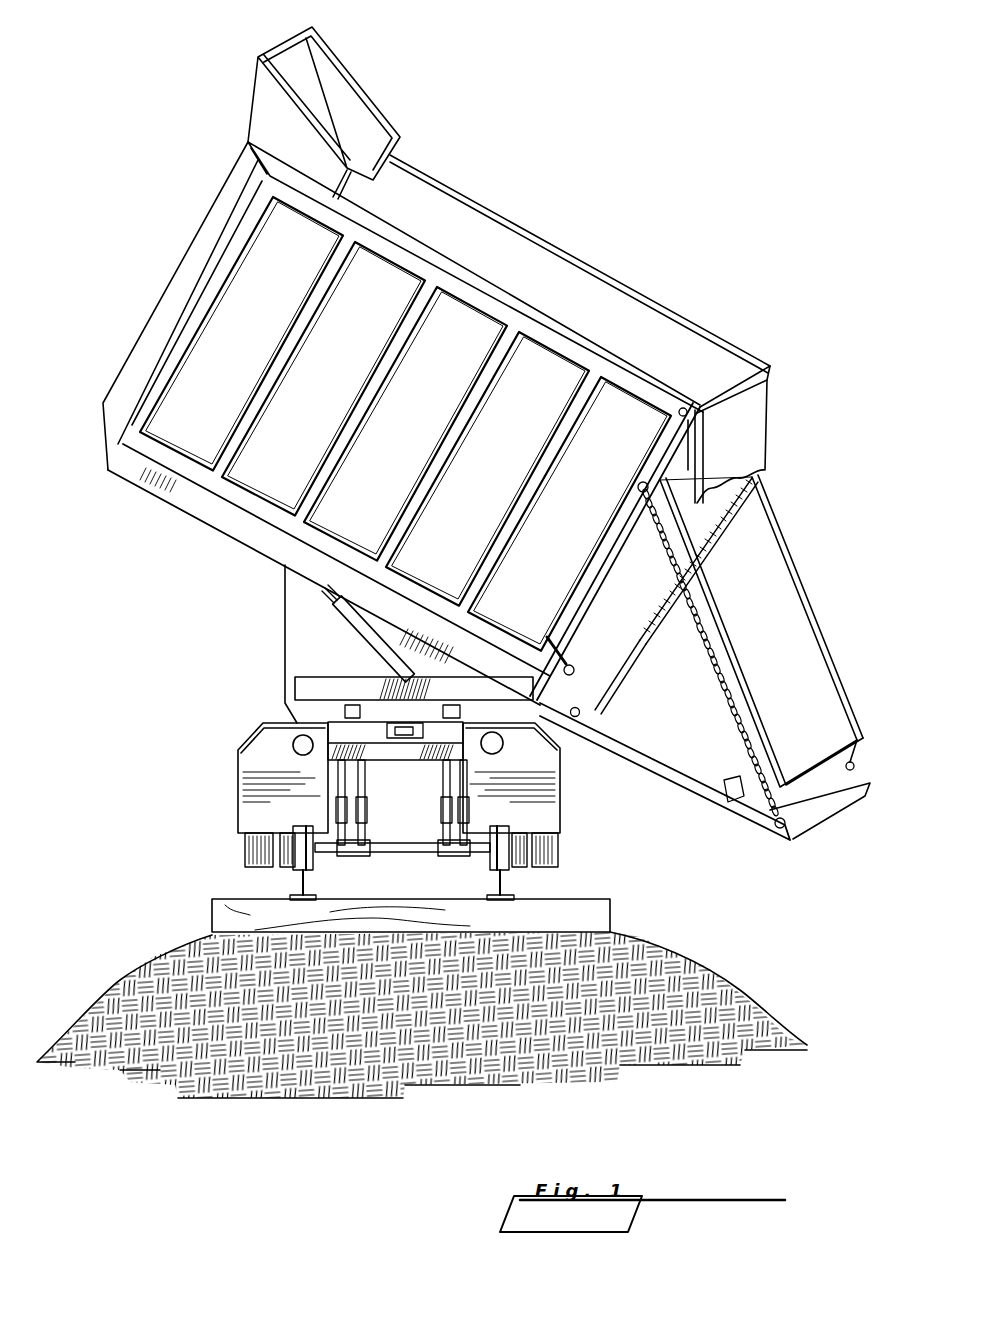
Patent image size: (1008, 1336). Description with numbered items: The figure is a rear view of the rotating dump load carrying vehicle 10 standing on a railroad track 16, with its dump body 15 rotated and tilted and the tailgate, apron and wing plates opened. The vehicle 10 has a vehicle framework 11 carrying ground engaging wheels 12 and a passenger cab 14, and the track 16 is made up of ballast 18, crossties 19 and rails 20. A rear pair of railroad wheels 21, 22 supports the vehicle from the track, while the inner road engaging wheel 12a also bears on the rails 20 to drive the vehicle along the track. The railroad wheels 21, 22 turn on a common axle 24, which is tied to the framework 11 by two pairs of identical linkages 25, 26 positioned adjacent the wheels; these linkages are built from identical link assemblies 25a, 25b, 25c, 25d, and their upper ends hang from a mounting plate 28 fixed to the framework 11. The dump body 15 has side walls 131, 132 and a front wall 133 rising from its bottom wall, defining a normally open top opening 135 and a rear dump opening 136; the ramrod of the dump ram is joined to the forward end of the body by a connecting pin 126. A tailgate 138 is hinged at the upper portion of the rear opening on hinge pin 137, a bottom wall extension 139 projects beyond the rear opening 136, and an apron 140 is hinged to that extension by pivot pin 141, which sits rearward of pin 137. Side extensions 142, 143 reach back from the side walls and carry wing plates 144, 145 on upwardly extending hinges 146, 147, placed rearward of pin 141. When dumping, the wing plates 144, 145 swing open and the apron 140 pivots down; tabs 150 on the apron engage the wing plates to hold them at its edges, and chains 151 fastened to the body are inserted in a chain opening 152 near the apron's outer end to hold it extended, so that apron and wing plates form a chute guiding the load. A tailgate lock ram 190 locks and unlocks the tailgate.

The rotating dump load carrying vehicle 10 is at (191, 644).
The vehicle framework 11 is at (348, 733).
The ground engaging wheels 12 is at (246, 843).
The inner road engaging wheel 12a is at (285, 868).
The passenger cab 14 is at (284, 598).
The dump body 15 is at (162, 274).
The railroad track 16 is at (622, 853).
The ballast 18 is at (713, 967).
The crossties 19 is at (613, 917).
The rails 20 is at (338, 630).
The railroad wheel 21 is at (302, 822).
The railroad wheel 22 is at (508, 823).
The axle 24 is at (409, 853).
The pair of linkages 25 is at (384, 845).
The link assembly 25a is at (340, 775).
The link assembly 25b is at (367, 788).
The link assembly 25c is at (440, 772).
The link assembly 25d is at (468, 788).
The pair of linkages 26 is at (460, 853).
The mounting plate 28 is at (374, 735).
The connecting pin 126 is at (553, 868).
The side wall 131 is at (546, 324).
The side wall 132 is at (685, 323).
The front wall 133 is at (247, 138).
The top opening 135 is at (585, 283).
The rear dump opening 136 is at (680, 485).
The hinge pin 137 is at (683, 406).
The tailgate 138 is at (750, 438).
The bottom wall extension 139 is at (553, 697).
The apron 140 is at (807, 810).
The pivot pin 141 is at (581, 712).
The side extension 142 is at (590, 602).
The side extension 143 is at (707, 543).
The wing plate 144 is at (743, 707).
The wing plate 145 is at (807, 603).
The hinge 146 is at (637, 640).
The hinge 147 is at (730, 540).
The tabs 150 is at (726, 805).
The chains 151 is at (665, 538).
The chain opening 152 is at (773, 837).
The tailgate lock ram 190 is at (560, 652).